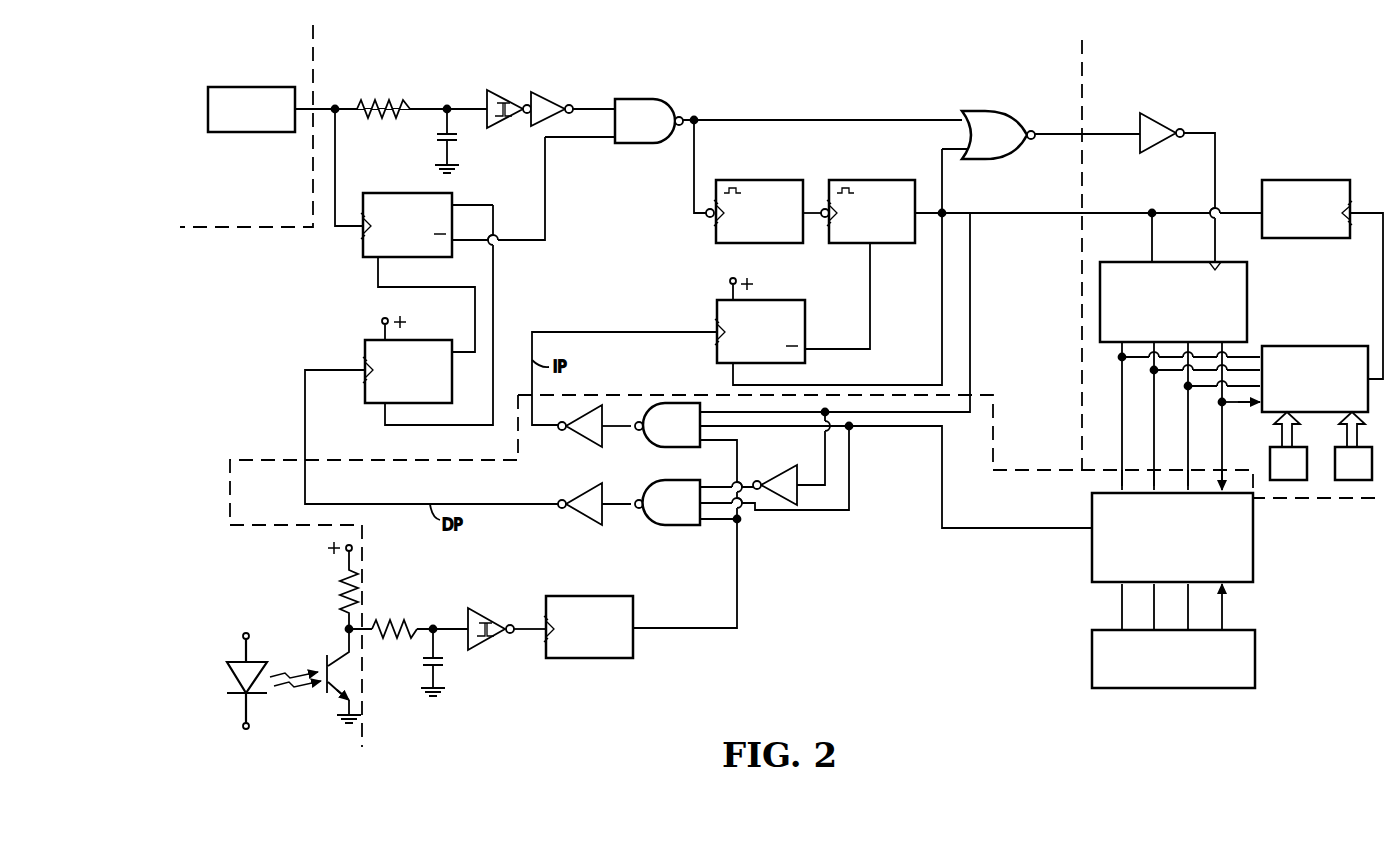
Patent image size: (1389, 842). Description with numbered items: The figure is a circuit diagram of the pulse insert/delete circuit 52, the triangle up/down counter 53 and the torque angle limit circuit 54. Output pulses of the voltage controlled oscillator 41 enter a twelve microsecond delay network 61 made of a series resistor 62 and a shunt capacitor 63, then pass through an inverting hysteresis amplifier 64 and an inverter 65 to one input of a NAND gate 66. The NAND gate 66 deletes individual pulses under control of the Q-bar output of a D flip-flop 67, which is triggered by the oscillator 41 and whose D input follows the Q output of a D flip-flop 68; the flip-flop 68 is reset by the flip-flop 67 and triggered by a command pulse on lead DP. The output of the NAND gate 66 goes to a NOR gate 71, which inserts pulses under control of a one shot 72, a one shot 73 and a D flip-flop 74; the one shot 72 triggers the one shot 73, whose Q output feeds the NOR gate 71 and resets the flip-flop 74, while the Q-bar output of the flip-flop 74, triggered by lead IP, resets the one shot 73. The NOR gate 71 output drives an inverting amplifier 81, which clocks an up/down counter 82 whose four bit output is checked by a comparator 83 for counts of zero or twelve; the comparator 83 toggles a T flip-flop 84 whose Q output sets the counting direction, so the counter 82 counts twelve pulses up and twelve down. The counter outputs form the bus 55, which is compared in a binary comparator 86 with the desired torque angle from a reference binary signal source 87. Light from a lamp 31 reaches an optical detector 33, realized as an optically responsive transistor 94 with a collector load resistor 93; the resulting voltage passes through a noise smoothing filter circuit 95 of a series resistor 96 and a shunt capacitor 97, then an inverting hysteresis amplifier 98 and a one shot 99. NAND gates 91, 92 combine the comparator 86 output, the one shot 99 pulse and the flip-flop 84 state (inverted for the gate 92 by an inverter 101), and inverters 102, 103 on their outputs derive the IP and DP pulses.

The lamp 31 is at (232, 672).
The optical detector 33 is at (356, 683).
The voltage controlled oscillator 41 is at (270, 87).
The pulse insert/delete circuit 52 is at (628, 250).
The triangle up/down counter 53 is at (1076, 304).
The torque angle limit circuit 54 is at (504, 490).
The bus 55 is at (1106, 434).
The delay network 61 is at (399, 113).
The series resistor 62 is at (380, 115).
The shunt capacitor 63 is at (435, 138).
The inverting hysteresis amplifier 64 is at (512, 90).
The inverter 65 is at (556, 97).
The NAND gate 66 is at (648, 145).
The D flip-flop 67 is at (386, 193).
The D flip-flop 68 is at (366, 340).
The NOR gate 71 is at (982, 112).
The one shot 72 is at (756, 180).
The one shot 73 is at (882, 180).
The D flip-flop 74 is at (805, 312).
The inverting amplifier 81 is at (1170, 118).
The up/down counter 82 is at (1247, 290).
The comparator 83 is at (1338, 346).
The toggle flip-flop 84 is at (1330, 180).
The binary comparator 86 is at (1253, 573).
The reference binary signal source 87 is at (1255, 666).
The NAND gate 91 is at (670, 447).
The NAND gate 92 is at (672, 525).
The collector load resistor 93 is at (342, 589).
The optically responsive transistor 94 is at (326, 660).
The noise smoothing filter circuit 95 is at (450, 676).
The series resistor 96 is at (406, 622).
The shunt capacitor 97 is at (420, 662).
The inverting hysteresis amplifier 98 is at (490, 642).
The one shot 99 is at (633, 656).
The inverter 101 is at (773, 505).
The inverter 102 is at (586, 447).
The inverter 103 is at (580, 525).